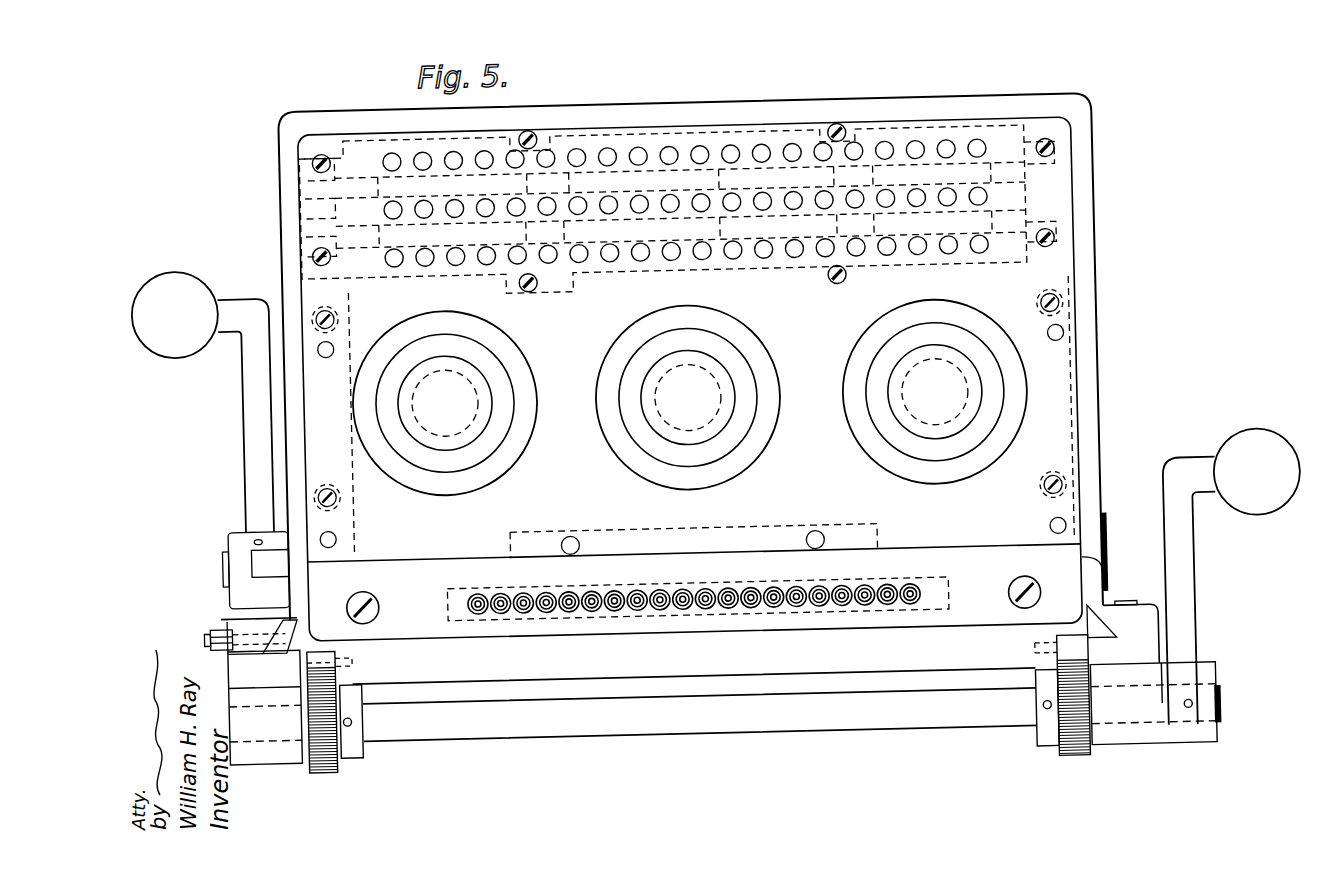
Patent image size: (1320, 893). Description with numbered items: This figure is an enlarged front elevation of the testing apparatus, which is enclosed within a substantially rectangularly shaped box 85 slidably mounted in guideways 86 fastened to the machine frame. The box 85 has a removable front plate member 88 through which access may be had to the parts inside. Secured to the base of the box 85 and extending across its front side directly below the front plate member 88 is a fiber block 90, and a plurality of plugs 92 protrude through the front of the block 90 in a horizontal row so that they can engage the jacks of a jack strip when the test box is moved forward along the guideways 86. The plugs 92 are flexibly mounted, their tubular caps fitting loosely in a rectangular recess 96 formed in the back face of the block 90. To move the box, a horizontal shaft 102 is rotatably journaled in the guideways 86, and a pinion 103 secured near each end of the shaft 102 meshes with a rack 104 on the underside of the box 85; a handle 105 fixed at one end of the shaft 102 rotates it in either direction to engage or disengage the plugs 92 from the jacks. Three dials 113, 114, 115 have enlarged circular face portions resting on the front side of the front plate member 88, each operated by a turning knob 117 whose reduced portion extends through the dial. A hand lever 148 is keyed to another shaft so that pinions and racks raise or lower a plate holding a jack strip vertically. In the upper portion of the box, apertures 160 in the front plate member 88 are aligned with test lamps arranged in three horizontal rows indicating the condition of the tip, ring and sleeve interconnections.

The box 85 is at (1108, 306).
The guideways 86 is at (245, 620).
The front plate member 88 is at (690, 379).
The fiber block 90 is at (441, 560).
The plugs 92 is at (541, 610).
The rectangular recess 96 is at (445, 615).
The horizontal shaft 102 is at (683, 734).
The pinion 103 is at (322, 764).
The rack 104 is at (340, 654).
The handle 105 is at (1191, 628).
The dial 113 is at (512, 463).
The dial 114 is at (755, 460).
The dial 115 is at (971, 480).
The turning knob 117 is at (655, 377).
The hand lever 148 is at (243, 422).
The apertures 160 is at (921, 243).